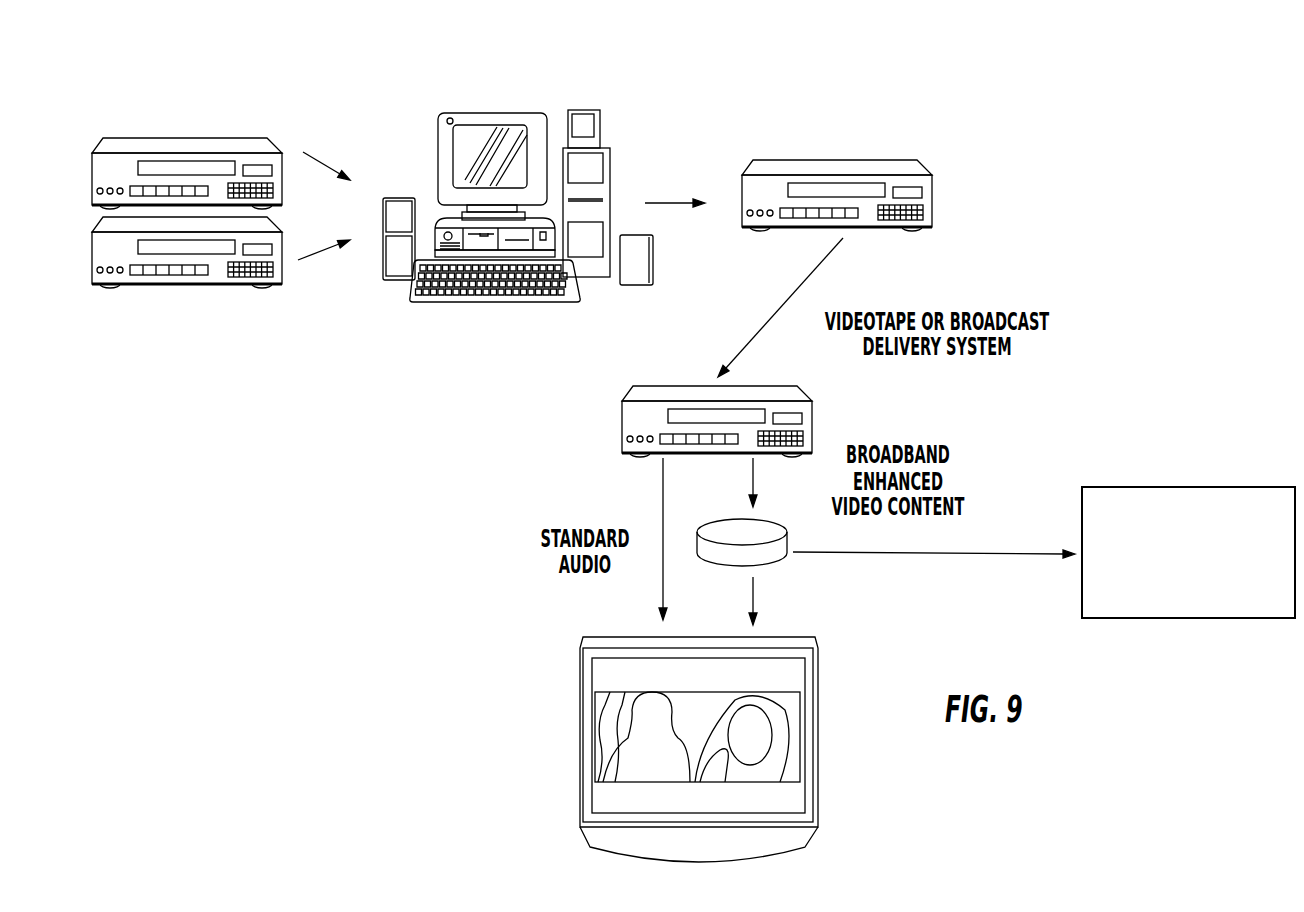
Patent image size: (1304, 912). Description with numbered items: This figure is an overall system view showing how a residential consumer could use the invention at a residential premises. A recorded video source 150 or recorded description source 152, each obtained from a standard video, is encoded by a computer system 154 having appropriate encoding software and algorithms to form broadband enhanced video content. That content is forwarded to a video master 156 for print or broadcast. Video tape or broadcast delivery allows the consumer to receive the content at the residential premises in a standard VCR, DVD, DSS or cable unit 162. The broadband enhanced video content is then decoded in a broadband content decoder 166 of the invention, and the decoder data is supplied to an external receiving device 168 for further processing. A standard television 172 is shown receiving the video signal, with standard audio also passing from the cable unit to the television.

The recorded video source 150 is at (187, 129).
The recorded description source 152 is at (187, 300).
The computer system 154 is at (518, 152).
The video master 156 is at (936, 179).
The standard VCR, DVD, DSS or cable unit 162 is at (731, 412).
The broadband content decoder 166 is at (742, 558).
The external receiving device 168 is at (1188, 510).
The standard television 172 is at (723, 749).